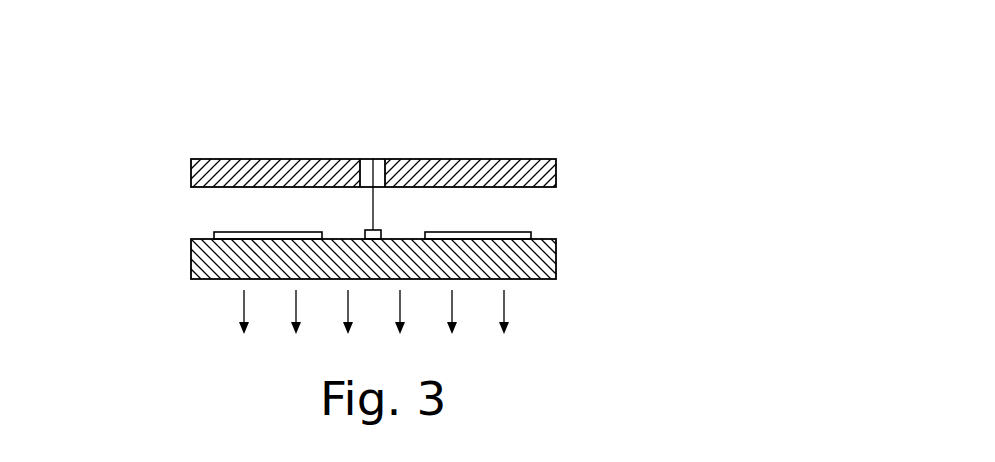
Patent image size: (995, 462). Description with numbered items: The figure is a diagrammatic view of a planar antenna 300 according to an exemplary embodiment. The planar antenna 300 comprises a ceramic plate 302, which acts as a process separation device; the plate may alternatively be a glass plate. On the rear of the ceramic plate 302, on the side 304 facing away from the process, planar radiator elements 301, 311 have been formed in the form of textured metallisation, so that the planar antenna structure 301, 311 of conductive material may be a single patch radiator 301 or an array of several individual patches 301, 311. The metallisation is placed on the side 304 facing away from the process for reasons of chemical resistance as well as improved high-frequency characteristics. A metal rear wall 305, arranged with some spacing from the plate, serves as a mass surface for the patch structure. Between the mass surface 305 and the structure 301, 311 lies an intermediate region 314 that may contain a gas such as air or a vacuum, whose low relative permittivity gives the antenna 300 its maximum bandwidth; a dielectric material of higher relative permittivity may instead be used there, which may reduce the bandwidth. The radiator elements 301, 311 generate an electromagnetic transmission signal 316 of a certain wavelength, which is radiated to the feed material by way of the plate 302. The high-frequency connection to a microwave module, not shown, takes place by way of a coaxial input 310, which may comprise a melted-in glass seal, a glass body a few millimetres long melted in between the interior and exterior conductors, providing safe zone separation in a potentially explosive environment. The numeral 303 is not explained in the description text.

The planar antenna 300 is at (186, 131).
The planar radiator element 301 is at (535, 223).
The ceramic plate 302 is at (558, 260).
The emitted light 303 is at (543, 316).
The side facing away from the process 304 is at (552, 128).
The metal rear wall 305 is at (540, 164).
The coaxial input 310 is at (380, 159).
The planar radiator element 311 is at (215, 232).
The intermediate region 314 is at (194, 200).
The electromagnetic transmission signal 316 is at (243, 303).